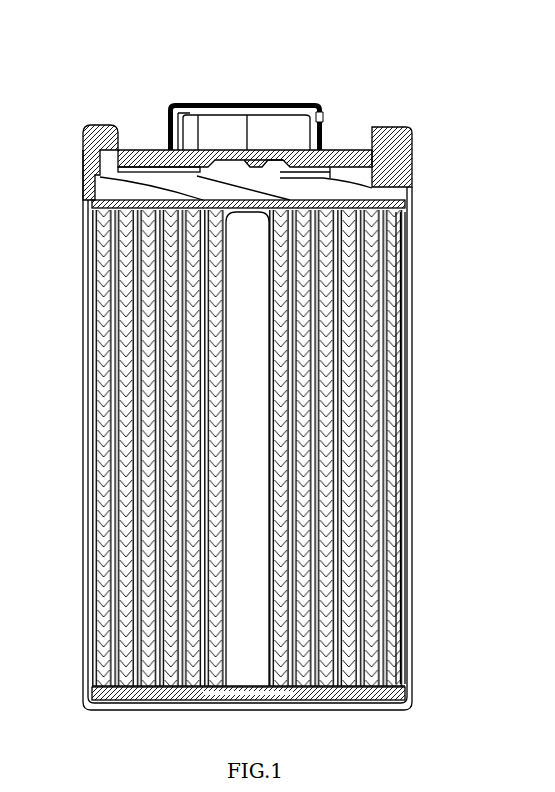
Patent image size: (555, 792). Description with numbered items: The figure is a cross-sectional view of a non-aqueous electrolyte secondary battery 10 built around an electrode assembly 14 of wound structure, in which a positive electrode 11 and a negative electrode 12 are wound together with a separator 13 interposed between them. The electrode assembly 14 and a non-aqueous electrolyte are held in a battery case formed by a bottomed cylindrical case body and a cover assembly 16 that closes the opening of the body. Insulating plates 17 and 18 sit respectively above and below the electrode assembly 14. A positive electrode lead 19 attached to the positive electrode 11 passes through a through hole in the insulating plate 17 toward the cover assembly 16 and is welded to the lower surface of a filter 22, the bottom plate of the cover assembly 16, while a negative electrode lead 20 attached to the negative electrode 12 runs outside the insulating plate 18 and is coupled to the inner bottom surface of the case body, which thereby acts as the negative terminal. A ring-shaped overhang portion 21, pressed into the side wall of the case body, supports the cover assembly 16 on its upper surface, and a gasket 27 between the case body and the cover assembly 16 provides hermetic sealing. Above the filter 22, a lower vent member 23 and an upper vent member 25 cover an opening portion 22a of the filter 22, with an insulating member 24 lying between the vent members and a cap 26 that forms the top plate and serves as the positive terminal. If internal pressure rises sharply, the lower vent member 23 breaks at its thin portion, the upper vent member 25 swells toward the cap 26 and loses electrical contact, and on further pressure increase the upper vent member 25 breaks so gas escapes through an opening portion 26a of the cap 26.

The non-aqueous electrolyte secondary battery 10 is at (398, 27).
The positive electrode 11 is at (412, 497).
The negative electrode 12 is at (412, 518).
The separator 13 is at (412, 538).
The electrode assembly 14 is at (476, 492).
The cover assembly 16 is at (320, 103).
The insulating plate 17 is at (410, 210).
The insulating plate 18 is at (412, 700).
The positive electrode lead 19 is at (84, 178).
The negative electrode lead 20 is at (84, 700).
The overhang portion 21 is at (84, 198).
The filter 22 is at (247, 158).
The opening portion 22a is at (297, 132).
The lower vent member 23 is at (178, 150).
The insulating member 24 is at (138, 126).
The upper vent member 25 is at (197, 130).
The cap 26 is at (293, 103).
The opening portion 26a is at (327, 117).
The gasket 27 is at (412, 142).